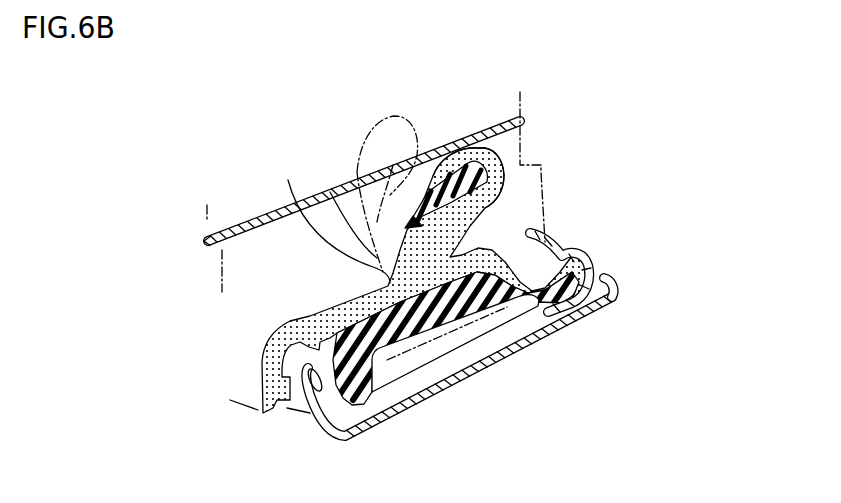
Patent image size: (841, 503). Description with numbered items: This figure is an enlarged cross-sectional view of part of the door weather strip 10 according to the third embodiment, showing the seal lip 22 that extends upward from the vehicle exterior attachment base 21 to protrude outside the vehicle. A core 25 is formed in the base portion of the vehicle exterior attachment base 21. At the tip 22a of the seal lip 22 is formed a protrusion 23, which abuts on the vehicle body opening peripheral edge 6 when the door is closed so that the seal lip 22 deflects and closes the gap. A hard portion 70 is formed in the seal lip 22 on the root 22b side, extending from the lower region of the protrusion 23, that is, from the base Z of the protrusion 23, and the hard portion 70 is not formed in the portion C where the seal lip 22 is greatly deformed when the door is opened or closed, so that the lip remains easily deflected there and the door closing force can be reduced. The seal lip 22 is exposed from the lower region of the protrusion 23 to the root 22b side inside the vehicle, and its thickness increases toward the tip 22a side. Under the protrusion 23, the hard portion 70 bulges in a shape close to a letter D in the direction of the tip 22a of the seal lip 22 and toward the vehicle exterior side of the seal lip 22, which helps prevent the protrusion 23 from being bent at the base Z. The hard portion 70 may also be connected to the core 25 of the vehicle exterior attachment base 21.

The door weather strip 10 is at (240, 333).
The vehicle body opening peripheral edge 6 is at (263, 223).
The vehicle exterior attachment base 21 is at (303, 318).
The seal lip 22 is at (480, 213).
The tip of the seal lip 22a is at (505, 170).
The root of the seal lip 22b is at (290, 184).
The protrusion 23 is at (505, 148).
The core 25 is at (413, 313).
The hard portion 70 is at (408, 218).
The portion where the seal lip is greatly deformed C is at (330, 192).
The base of the protrusion Z is at (416, 216).